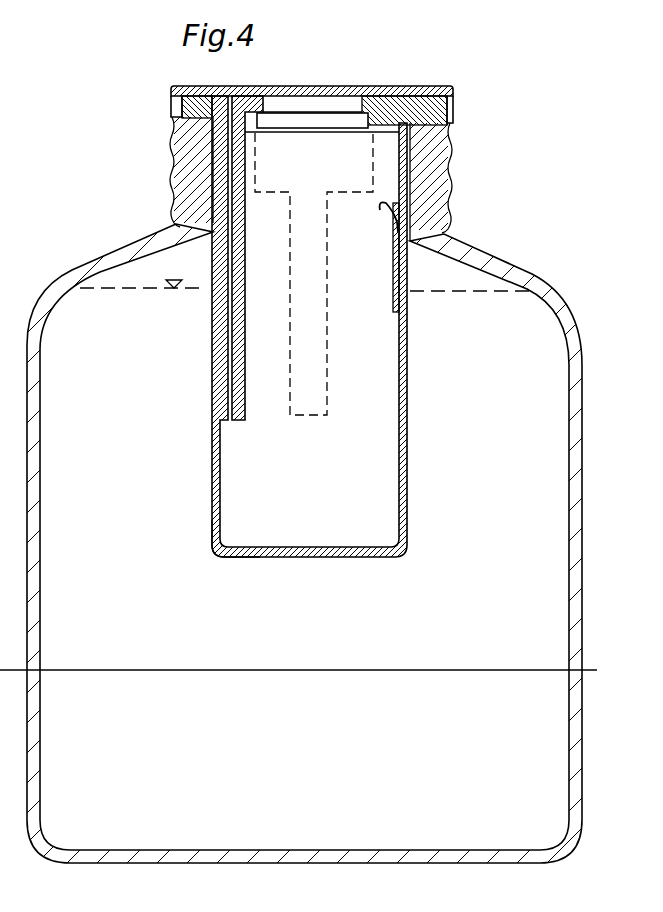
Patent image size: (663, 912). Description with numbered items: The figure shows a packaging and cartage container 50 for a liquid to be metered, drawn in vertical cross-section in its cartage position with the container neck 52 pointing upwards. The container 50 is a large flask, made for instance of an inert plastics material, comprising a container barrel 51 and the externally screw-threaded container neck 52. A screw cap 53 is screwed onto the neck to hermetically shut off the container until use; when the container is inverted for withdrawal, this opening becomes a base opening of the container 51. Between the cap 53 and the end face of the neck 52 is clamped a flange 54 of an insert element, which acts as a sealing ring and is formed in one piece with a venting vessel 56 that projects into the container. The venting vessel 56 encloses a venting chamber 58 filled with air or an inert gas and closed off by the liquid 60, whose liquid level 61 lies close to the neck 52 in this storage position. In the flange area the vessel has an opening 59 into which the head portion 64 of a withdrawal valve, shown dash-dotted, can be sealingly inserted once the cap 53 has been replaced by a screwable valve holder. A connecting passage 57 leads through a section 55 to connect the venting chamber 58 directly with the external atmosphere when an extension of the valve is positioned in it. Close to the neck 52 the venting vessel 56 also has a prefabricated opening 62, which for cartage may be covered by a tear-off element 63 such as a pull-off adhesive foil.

The packaging and cartage container 50 is at (323, 543).
The container barrel 51 is at (323, 543).
The container neck 52 is at (430, 205).
The screw cap 53 is at (340, 91).
The flange 54 is at (400, 107).
The section 55 is at (245, 404).
The venting vessel 56 is at (209, 523).
The connecting passage 57 is at (230, 420).
The venting chamber 58 is at (302, 333).
The opening 59 is at (360, 118).
The liquid 60 is at (509, 581).
The liquid level 61 is at (467, 287).
The prefabricated opening 62 is at (408, 285).
The tear-off element 63 is at (394, 288).
The head portion of a withdrawal valve 64 is at (318, 298).